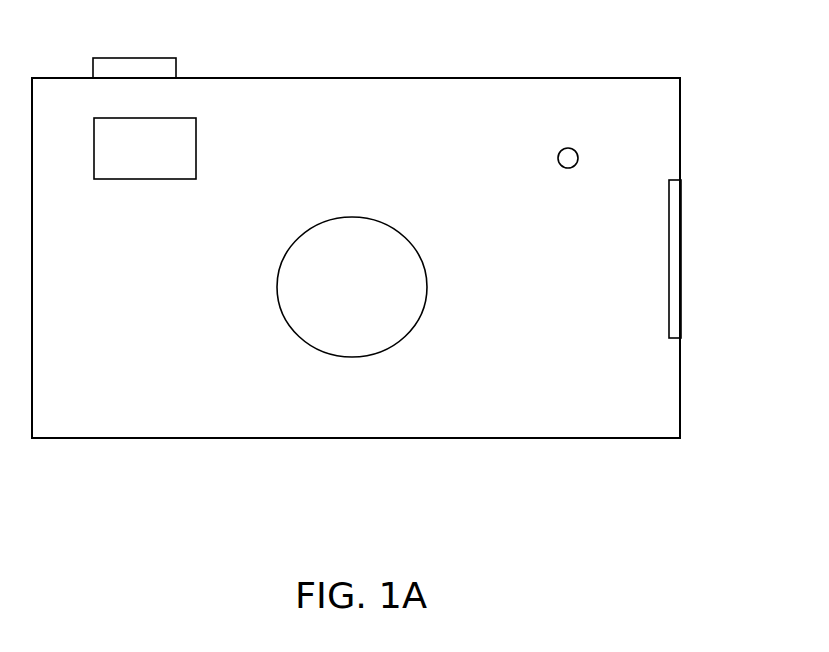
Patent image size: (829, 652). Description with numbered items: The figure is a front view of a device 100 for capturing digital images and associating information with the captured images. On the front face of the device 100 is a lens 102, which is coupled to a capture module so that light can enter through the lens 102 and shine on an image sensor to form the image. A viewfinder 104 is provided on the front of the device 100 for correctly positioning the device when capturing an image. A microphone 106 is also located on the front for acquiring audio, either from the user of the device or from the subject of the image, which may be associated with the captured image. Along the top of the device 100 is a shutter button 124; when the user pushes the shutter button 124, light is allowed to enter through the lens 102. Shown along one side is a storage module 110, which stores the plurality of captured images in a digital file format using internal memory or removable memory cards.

The device 100 is at (457, 78).
The shutter button 124 is at (176, 70).
The viewfinder 104 is at (91, 148).
The lens 102 is at (346, 357).
The microphone 106 is at (563, 168).
The storage module 110 is at (681, 238).